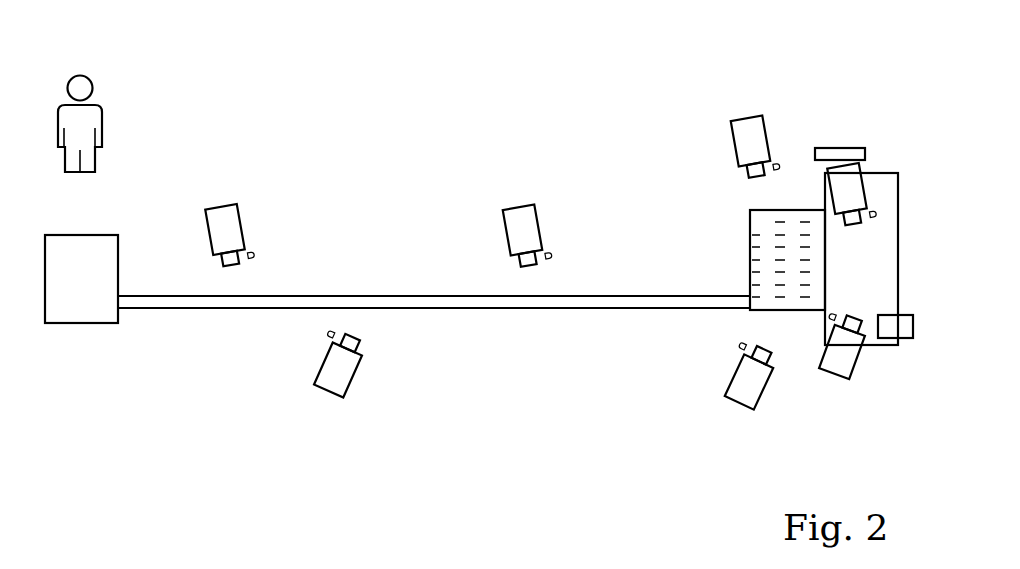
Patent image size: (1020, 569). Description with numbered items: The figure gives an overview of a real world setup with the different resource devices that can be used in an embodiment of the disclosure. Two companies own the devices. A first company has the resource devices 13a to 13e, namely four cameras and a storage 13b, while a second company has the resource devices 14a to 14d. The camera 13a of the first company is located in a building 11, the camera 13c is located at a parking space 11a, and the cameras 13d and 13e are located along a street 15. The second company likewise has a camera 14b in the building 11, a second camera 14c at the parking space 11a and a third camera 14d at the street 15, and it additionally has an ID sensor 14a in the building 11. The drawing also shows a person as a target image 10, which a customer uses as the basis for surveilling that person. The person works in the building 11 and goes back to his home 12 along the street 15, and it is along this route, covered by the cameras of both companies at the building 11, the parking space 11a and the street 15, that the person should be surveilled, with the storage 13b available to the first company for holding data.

The target image 10 is at (82, 75).
The building 11 is at (888, 172).
The parking space 11a is at (750, 224).
The home 12 is at (77, 323).
The camera 13a is at (830, 163).
The storage 13b is at (842, 147).
The camera 13c is at (737, 117).
The camera 13d is at (517, 203).
The camera 13e is at (232, 203).
The ID sensor 14a is at (893, 338).
The camera 14b is at (832, 375).
The second camera 14c is at (735, 400).
The third camera 14d is at (345, 398).
The street 15 is at (462, 309).